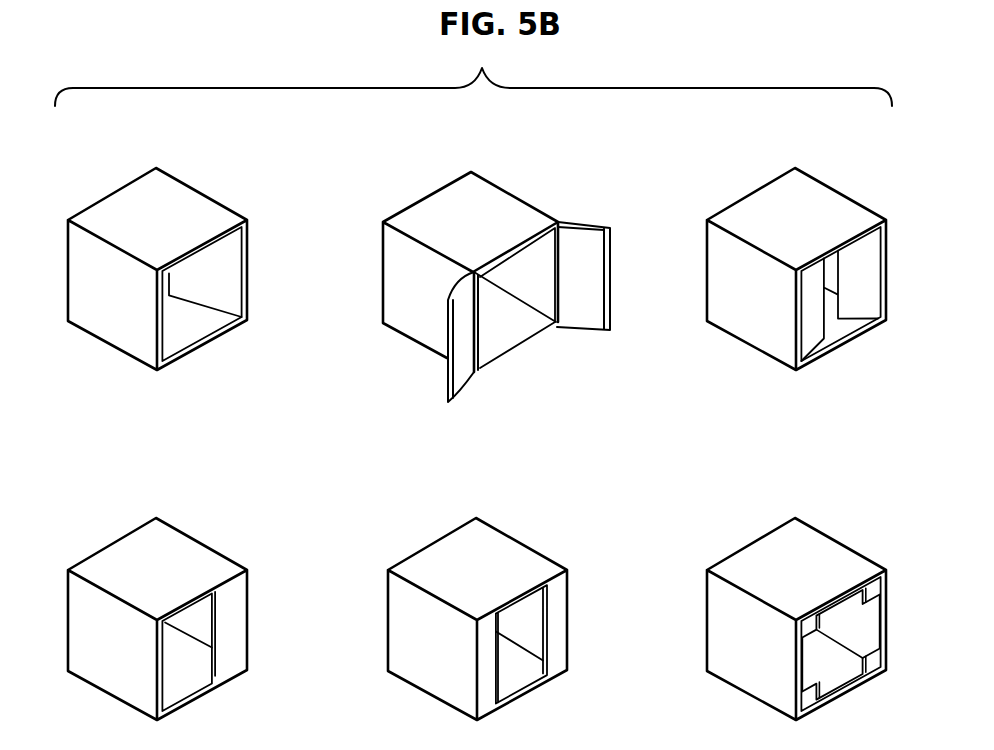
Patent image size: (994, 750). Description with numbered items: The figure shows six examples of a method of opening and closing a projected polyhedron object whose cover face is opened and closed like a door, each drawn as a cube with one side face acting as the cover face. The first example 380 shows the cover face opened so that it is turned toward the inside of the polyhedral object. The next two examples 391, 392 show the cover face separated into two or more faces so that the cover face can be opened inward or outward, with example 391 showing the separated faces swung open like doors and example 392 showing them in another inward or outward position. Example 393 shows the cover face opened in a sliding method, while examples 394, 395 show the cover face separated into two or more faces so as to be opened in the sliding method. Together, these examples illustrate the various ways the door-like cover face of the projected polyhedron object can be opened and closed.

The box with open side 380 is at (124, 198).
The cover face separated into two or more faces opened inward or outward 391 is at (438, 200).
The cover face separated into two or more faces opened inward or outward 392 is at (762, 198).
The cover face opened in a sliding method 393 is at (123, 548).
The cover face separated into two or more faces opened in a sliding method 394 is at (443, 548).
The cover face separated into two or more faces opened in a sliding method 395 is at (763, 548).